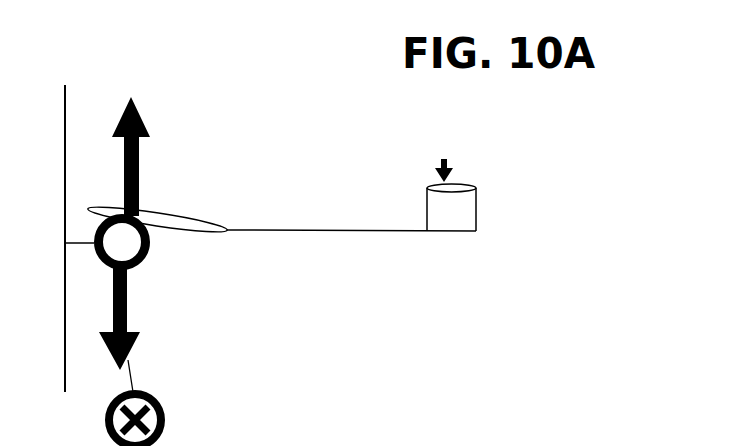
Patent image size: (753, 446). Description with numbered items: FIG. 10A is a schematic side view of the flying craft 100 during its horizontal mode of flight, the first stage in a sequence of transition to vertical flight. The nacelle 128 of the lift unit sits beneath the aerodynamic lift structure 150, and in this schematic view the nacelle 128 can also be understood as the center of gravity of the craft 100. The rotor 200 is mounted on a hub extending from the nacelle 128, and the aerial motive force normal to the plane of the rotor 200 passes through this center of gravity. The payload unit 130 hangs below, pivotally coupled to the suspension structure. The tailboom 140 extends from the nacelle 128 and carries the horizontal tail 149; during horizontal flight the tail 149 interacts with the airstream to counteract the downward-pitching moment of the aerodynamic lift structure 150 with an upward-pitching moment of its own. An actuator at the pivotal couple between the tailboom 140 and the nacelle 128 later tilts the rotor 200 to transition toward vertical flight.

The flying craft 100 is at (542, 265).
The nacelle 128 is at (150, 257).
The payload unit 130 is at (165, 408).
The tailboom 140 is at (518, 175).
The horizontal tail 149 is at (468, 185).
The aerodynamic lift structure 150 is at (207, 211).
The rotor 200 is at (63, 105).